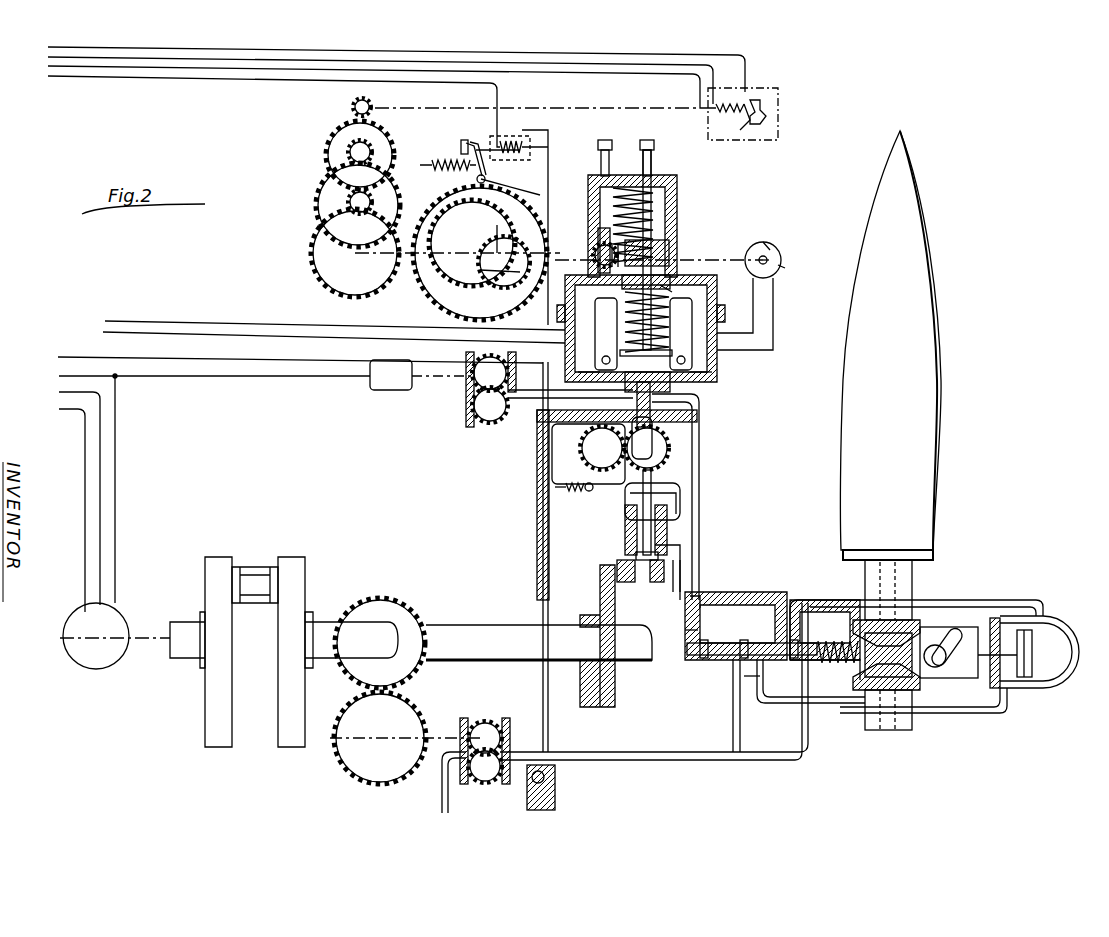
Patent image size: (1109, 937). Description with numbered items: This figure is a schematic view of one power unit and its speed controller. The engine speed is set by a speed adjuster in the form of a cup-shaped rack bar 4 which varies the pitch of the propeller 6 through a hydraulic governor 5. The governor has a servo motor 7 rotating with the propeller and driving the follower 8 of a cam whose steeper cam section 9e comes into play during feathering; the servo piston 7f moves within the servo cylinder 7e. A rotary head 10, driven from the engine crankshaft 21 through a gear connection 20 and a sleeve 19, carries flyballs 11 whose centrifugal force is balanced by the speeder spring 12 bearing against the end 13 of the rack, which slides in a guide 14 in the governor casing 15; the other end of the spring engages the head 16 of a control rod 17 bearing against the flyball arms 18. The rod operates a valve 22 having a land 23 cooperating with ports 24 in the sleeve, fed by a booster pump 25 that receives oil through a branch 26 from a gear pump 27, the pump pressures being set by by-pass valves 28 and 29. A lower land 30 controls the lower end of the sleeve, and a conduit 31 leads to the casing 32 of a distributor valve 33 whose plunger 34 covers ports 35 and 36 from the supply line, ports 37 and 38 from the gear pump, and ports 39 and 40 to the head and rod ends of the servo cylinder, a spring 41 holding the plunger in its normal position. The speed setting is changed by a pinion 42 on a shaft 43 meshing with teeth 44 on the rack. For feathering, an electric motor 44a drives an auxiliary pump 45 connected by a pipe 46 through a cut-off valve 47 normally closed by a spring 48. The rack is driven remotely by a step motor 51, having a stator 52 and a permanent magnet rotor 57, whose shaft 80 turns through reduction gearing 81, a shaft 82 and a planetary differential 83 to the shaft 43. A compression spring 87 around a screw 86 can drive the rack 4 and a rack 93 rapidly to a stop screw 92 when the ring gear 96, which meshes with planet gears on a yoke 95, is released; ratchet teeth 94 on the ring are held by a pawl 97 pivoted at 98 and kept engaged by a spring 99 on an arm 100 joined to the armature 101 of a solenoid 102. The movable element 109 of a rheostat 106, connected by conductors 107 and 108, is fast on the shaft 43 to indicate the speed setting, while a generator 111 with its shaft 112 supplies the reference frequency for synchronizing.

The rack bar 4 is at (670, 268).
The governor 5 is at (712, 302).
The propeller 6 is at (933, 418).
The servo motor 7 is at (1062, 620).
The servo cylinder 7e is at (1005, 690).
The piston 7f is at (1038, 653).
The follower 8 is at (940, 676).
The steeper cam section 9e is at (956, 632).
The rotary head 10 is at (706, 375).
The flyballs 11 is at (649, 334).
The speeder spring 12 is at (657, 324).
The end of rack 13 is at (677, 289).
The guide 14 is at (672, 248).
The governor casing 15 is at (720, 372).
The head of control rod 16 is at (642, 348).
The control rod 17 is at (653, 410).
The flyball arms 18 is at (587, 371).
The sleeve 19 is at (700, 400).
The gear connection 20 is at (622, 590).
The engine crankshaft 21 is at (490, 627).
The valve 22 is at (686, 530).
The land 23 is at (640, 508).
The ports 24 is at (676, 506).
The booster pump 25 is at (578, 449).
The branch 26 is at (543, 534).
The gear pump 27 is at (468, 724).
The by-pass valve 28 is at (575, 495).
The by-pass valve 29 is at (556, 788).
The land 30 is at (636, 553).
The conduit 31 is at (684, 548).
The casing 32 is at (792, 598).
The distributor valve 33 is at (828, 722).
The plunger 34 is at (716, 701).
The port 35 is at (678, 627).
The port 36 is at (772, 638).
The port 37 is at (732, 672).
The port 38 is at (812, 672).
The port 39 is at (825, 630).
The port 40 is at (757, 690).
The spring 41 is at (791, 652).
The pinion 42 is at (588, 254).
The shaft 43 is at (589, 262).
The teeth 44 is at (635, 371).
The electric motor 44a is at (380, 388).
The auxiliary pump 45 is at (470, 392).
The pipe 46 is at (700, 446).
The cut-off valve 47 is at (706, 588).
The spring 48 is at (718, 638).
The electric step motor 51 is at (735, 100).
The stator 52 is at (745, 125).
The permanent magnet rotor 57 is at (767, 110).
The step motor shaft 80 is at (616, 112).
The gearing 81 is at (322, 190).
The shaft 82 is at (355, 253).
The planetary differential 83 is at (450, 235).
The screw 86 is at (654, 160).
The compression spring 87 is at (660, 222).
The stop screw 92 is at (598, 204).
The rack 93 is at (598, 236).
The ratchet teeth 94 is at (440, 305).
The yoke 95 is at (515, 240).
The ring gear 96 is at (430, 292).
The pawl 97 is at (468, 175).
The pivot 98 is at (508, 184).
The spring 99 is at (448, 152).
The arm 100 is at (488, 165).
The armature 101 is at (478, 140).
The solenoid 102 is at (520, 216).
The rheostat 106 is at (783, 256).
The conductor 107 is at (280, 322).
The conductor 108 is at (300, 346).
The movable element 109 is at (762, 242).
The generator 111 is at (112, 612).
The shaft 112 is at (150, 640).